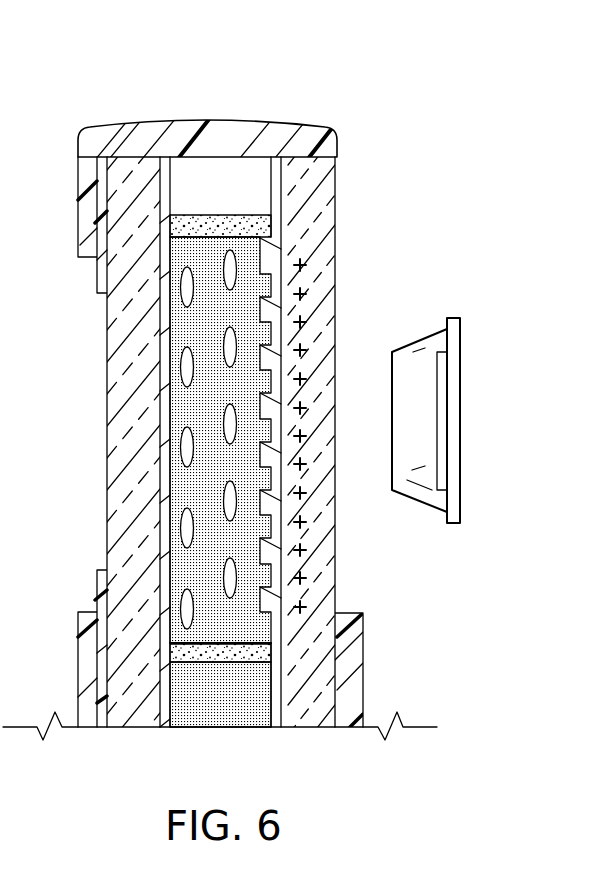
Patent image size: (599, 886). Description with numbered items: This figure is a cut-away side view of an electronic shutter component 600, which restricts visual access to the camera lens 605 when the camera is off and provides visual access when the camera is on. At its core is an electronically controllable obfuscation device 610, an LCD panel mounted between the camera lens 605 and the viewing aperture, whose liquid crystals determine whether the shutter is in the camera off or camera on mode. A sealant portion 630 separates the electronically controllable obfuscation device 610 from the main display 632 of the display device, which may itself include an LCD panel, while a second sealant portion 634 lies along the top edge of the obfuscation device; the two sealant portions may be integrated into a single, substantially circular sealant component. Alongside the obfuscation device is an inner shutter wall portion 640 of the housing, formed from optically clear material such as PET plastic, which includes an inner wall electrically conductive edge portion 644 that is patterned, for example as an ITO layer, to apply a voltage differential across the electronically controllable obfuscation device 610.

The electronic shutter component 600 is at (90, 58).
The camera lens 605 is at (461, 419).
The electronically controllable obfuscation device 610 is at (178, 492).
The sealant portion 630 is at (233, 655).
The main display 632 is at (197, 715).
The second sealant portion 634 is at (223, 223).
The inner shutter wall portion 640 is at (305, 313).
The inner wall electrically conductive edge portion 644 is at (267, 558).